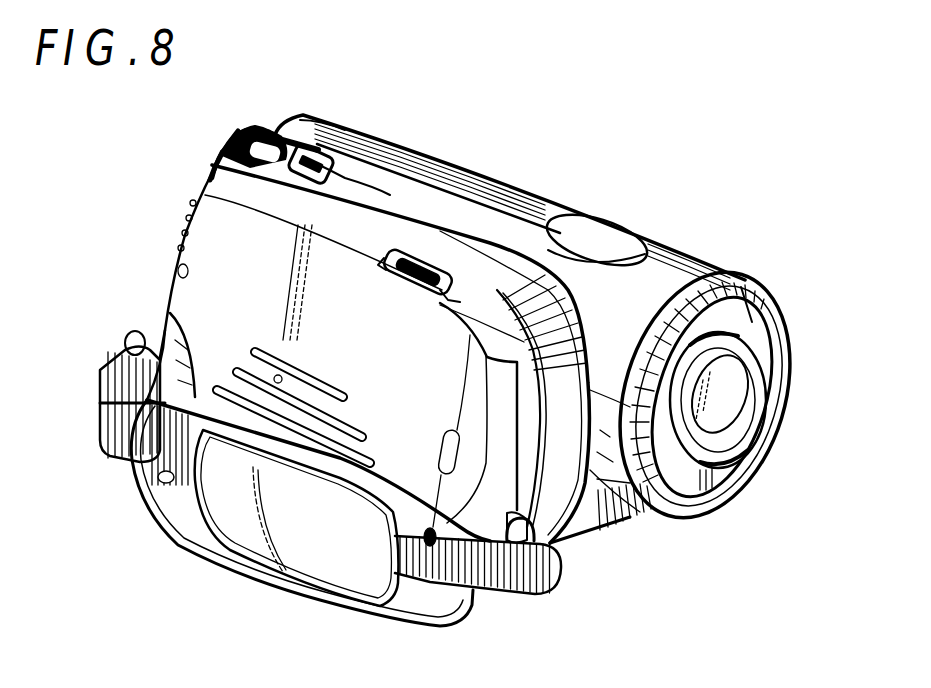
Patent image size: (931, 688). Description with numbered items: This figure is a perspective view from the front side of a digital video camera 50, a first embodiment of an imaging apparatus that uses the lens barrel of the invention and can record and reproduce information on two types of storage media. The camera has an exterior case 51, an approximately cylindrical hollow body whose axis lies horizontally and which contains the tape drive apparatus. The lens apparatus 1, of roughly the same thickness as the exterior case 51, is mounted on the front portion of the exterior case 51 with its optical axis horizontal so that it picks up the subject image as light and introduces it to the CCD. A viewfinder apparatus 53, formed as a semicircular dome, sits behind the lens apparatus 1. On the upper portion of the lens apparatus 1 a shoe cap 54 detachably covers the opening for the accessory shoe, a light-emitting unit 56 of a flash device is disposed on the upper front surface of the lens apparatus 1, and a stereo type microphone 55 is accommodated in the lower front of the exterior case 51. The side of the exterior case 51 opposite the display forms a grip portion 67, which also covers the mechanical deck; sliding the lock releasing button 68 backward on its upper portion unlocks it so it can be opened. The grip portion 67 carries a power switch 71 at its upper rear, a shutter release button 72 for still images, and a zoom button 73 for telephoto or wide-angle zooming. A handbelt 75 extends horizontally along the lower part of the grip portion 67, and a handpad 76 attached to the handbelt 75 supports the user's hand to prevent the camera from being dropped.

The lens apparatus 1 is at (765, 473).
The digital video camera 50 is at (689, 218).
The exterior case 51 is at (510, 200).
The viewfinder apparatus 53 is at (290, 118).
The shoe cap 54 is at (587, 237).
The stereo type microphone 55 is at (623, 520).
The light-emitting unit 56 is at (747, 277).
The grip portion 67 is at (218, 250).
The lock releasing button 68 is at (420, 256).
The power switch 71 is at (230, 138).
The shutter release button 72 is at (270, 137).
The zoom button 73 is at (332, 123).
The handbelt 75 is at (478, 597).
The handpad 76 is at (303, 563).